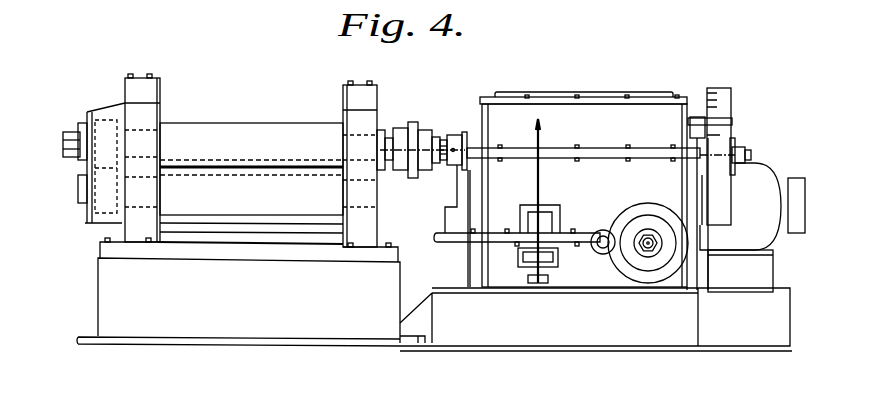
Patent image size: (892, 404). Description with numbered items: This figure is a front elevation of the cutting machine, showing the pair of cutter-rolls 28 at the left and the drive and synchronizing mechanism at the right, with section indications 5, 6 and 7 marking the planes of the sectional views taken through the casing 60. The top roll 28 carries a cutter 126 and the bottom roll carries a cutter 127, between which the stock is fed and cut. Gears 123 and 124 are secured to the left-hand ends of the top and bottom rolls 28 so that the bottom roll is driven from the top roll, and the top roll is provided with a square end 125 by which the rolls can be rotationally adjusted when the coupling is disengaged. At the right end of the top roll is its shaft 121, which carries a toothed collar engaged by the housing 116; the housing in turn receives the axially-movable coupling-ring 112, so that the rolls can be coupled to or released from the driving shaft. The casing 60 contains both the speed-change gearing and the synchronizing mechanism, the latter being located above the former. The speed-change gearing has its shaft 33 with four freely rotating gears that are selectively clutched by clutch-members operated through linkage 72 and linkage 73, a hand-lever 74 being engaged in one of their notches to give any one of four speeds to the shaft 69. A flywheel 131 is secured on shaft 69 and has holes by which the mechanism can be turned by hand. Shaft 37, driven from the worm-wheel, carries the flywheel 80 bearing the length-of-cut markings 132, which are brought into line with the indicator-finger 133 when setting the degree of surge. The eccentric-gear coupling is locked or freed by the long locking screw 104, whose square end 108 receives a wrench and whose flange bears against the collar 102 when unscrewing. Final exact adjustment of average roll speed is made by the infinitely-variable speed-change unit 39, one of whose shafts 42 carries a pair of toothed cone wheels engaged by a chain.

The cutter-rolls 28 is at (260, 122).
The shaft 33 is at (603, 230).
The shaft 37 is at (745, 150).
The speed-change unit 39 is at (778, 170).
The shaft 42 is at (805, 207).
The casing 60 is at (582, 115).
The shaft 69 is at (649, 229).
The linkage 72 is at (520, 258).
The linkage 73 is at (558, 256).
The hand-lever 74 is at (540, 190).
The flywheel 80 is at (732, 100).
The collar 102 is at (456, 135).
The locking screw 104 is at (443, 165).
The square end 108 is at (435, 165).
The coupling-ring 112 is at (439, 135).
The housing 116 is at (413, 121).
The shaft 121 is at (387, 130).
The gear 123 is at (108, 120).
The gear 124 is at (95, 228).
The square end 125 is at (63, 147).
The cutter 126 is at (258, 158).
The cutter 127 is at (252, 177).
The flywheel 131 is at (621, 214).
The length of cut markings 132 is at (715, 88).
The indicator-finger 133 is at (734, 122).
The section line 5 is at (435, 238).
The section line 6 is at (648, 363).
The section line 7 is at (388, 160).